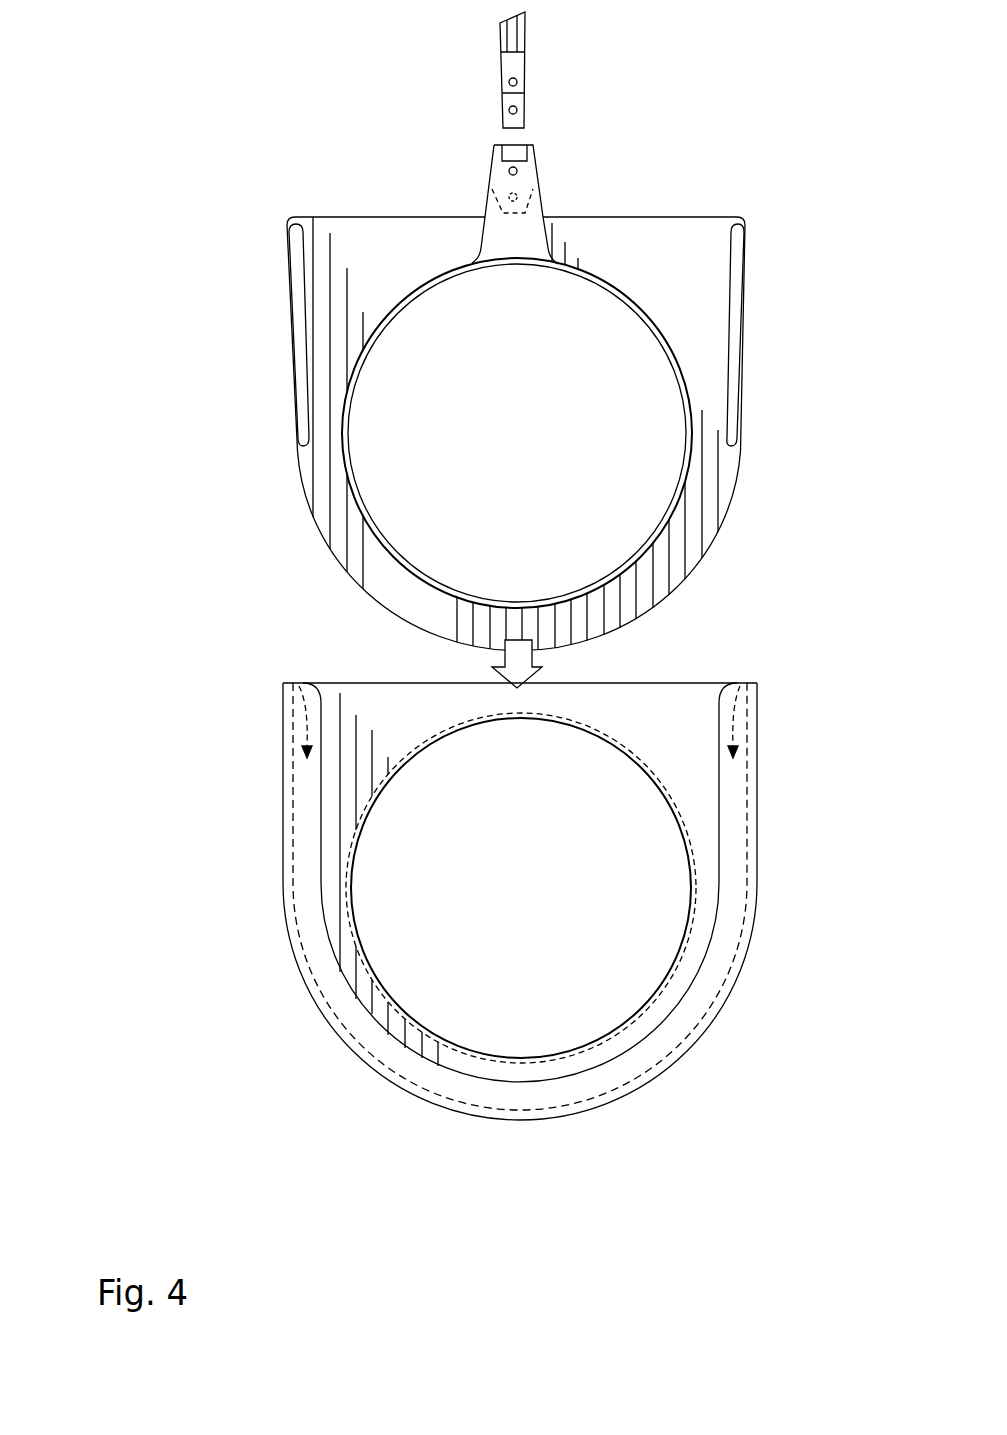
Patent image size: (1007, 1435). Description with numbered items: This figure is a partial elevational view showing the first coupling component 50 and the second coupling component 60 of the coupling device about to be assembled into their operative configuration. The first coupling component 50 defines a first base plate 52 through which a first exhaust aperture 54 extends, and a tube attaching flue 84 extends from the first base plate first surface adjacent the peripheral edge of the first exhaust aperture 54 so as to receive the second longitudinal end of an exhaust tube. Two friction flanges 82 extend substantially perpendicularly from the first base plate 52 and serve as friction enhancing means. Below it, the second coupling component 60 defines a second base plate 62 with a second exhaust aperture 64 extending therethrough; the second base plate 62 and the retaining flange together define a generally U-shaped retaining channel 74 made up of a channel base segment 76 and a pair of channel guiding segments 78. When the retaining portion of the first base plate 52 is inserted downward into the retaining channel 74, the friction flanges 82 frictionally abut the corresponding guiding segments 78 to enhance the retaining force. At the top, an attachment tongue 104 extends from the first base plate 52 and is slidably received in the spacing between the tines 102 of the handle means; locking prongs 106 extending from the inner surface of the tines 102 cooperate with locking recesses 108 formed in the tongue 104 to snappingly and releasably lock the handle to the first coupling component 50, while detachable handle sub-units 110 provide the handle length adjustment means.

The first coupling component 50 is at (258, 261).
The first base plate 52 is at (712, 230).
The first exhaust aperture 54 is at (646, 538).
The second coupling component 60 is at (262, 928).
The second base plate 62 is at (693, 785).
The second exhaust aperture 64 is at (692, 889).
The retaining channel 74 is at (297, 683).
The channel base segment 76 is at (512, 1122).
The channel guiding segments 78 is at (288, 824).
The friction flanges 82 is at (292, 355).
The tube attaching flue 84 is at (688, 465).
The tines 102 is at (522, 100).
The attachment tongue 104 is at (498, 173).
The locking prongs 106 is at (505, 108).
The locking recesses 108 is at (516, 196).
The detachable handle sub-units 110 is at (522, 37).